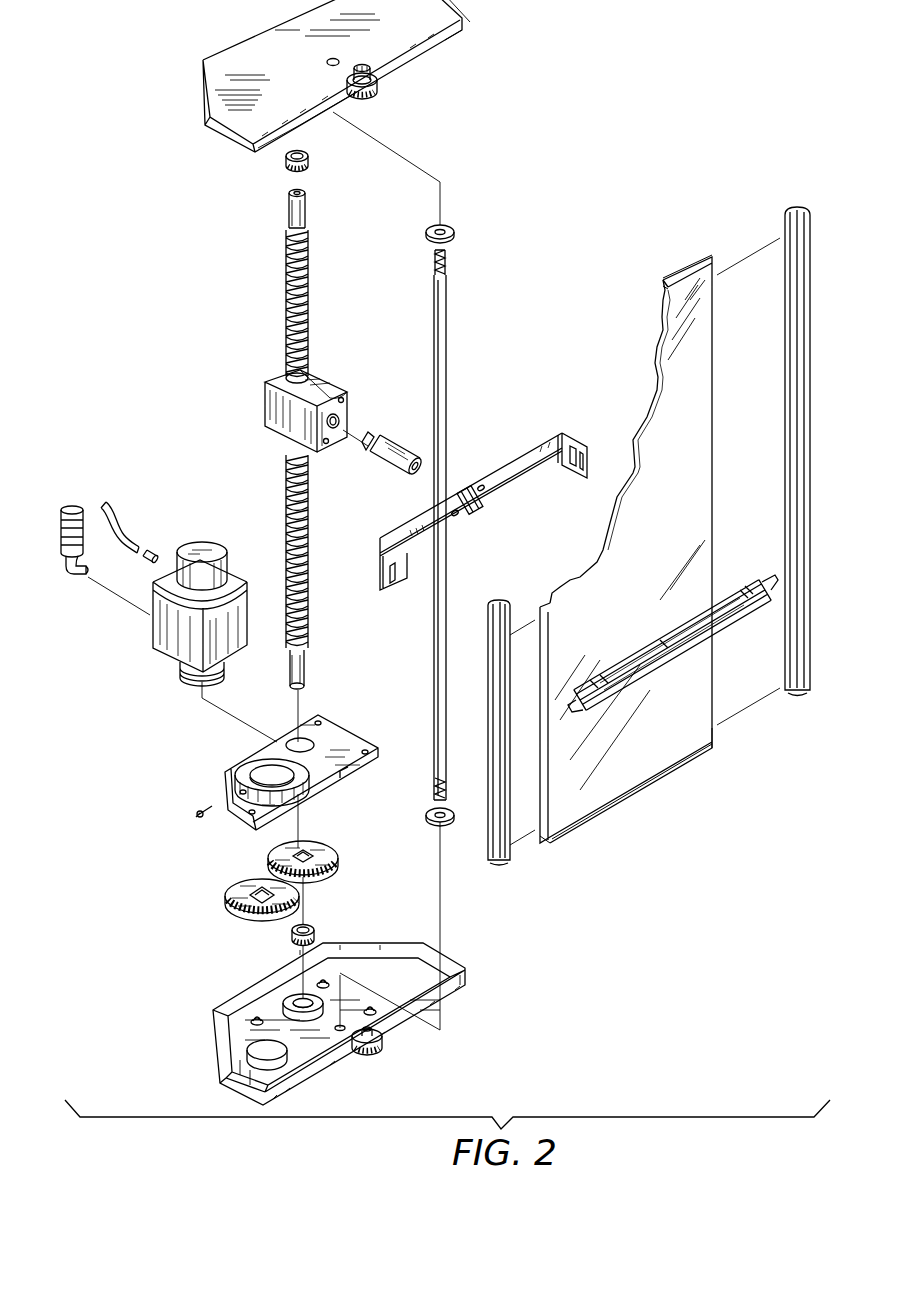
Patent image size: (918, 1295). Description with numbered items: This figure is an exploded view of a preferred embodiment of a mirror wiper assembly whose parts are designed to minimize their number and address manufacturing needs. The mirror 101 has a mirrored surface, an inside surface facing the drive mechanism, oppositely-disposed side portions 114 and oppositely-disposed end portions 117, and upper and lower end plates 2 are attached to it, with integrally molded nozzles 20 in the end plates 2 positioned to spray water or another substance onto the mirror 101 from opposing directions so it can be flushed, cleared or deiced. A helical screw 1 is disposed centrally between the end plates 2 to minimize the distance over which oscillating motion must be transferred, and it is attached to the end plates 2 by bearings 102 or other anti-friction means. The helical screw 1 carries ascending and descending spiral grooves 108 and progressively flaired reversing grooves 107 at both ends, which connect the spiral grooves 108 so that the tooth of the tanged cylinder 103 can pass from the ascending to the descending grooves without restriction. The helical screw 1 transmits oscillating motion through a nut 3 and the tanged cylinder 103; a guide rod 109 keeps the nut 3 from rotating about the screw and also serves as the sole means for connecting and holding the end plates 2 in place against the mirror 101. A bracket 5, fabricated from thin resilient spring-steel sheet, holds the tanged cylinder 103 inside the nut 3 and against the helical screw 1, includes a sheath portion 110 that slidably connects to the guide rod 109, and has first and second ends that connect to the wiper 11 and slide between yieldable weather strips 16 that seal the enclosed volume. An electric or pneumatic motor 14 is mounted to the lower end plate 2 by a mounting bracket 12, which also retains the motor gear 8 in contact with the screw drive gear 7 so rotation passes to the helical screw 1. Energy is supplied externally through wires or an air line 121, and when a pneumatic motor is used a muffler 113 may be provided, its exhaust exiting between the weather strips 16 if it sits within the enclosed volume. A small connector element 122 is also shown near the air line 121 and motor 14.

The helical screw 1 is at (299, 440).
The end plates 2 is at (470, 10).
The nut 3 is at (265, 408).
The bracket 5 is at (529, 455).
The screw drive gear 7 is at (338, 862).
The motor gear 8 is at (228, 890).
The wiper 11 is at (724, 649).
The mounting bracket 12 is at (338, 731).
The motor 14 is at (165, 646).
The weather strips 16 is at (785, 321).
The nozzles 20 is at (371, 78).
The mirror 101 is at (665, 538).
The bearings 102 is at (288, 165).
The tanged cylinder 103 is at (400, 443).
The reversing grooves 107 is at (287, 240).
The spiral grooves 108 is at (292, 357).
The guide rod 109 is at (448, 339).
The sheath portion 110 is at (480, 505).
The muffler 113 is at (63, 560).
The side portions 114 is at (712, 733).
The end portions 117 is at (680, 275).
The air line 121 is at (123, 514).
The connector pin 122 is at (153, 554).